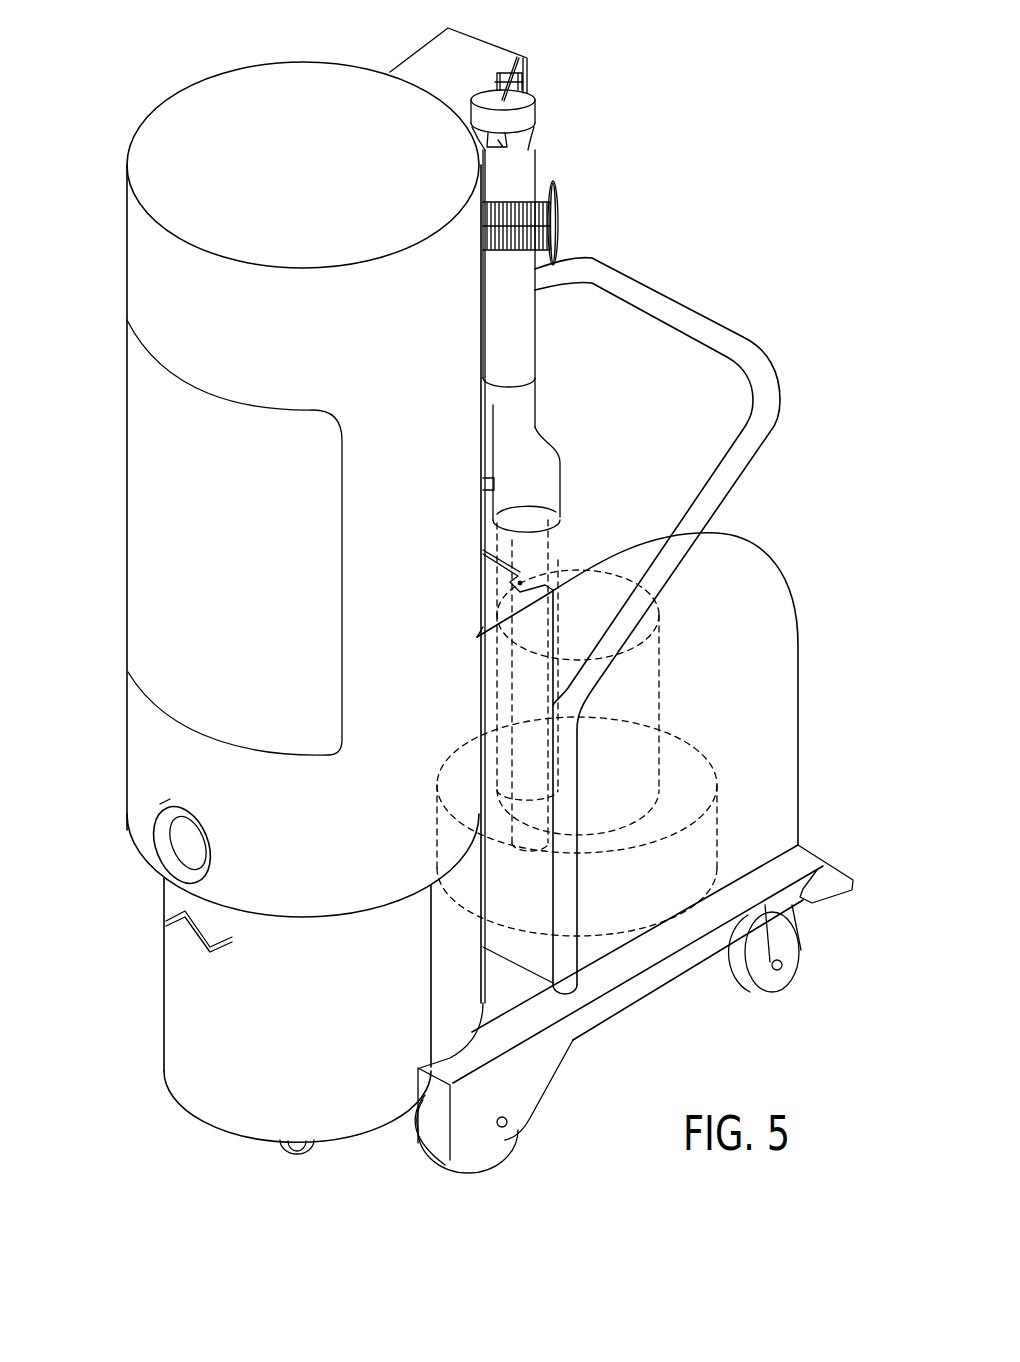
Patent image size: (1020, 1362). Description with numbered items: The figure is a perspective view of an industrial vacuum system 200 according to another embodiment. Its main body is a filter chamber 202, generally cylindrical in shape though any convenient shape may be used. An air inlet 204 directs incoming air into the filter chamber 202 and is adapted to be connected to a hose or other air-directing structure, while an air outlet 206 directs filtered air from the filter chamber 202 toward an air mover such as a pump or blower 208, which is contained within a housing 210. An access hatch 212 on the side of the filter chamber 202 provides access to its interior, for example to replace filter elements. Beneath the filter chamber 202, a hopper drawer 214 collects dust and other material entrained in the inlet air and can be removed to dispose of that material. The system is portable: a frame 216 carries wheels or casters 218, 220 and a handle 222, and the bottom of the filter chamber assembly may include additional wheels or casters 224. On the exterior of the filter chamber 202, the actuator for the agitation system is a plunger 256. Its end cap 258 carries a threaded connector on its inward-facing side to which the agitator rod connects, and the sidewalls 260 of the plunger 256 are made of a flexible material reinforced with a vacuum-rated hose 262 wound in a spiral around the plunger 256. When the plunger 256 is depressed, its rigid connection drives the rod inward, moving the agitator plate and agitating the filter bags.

The industrial vacuum system 200 is at (187, 79).
The filter chamber 202 is at (123, 262).
The air inlet 204 is at (143, 808).
The air outlet 206 is at (519, 345).
The pump or blower 208 is at (660, 678).
The housing 210 is at (785, 592).
The access hatch 212 is at (140, 573).
The hopper drawer 214 is at (180, 992).
The frame 216 is at (645, 990).
The wheel or caster 218 is at (430, 1134).
The wheel or caster 220 is at (754, 983).
The handle 222 is at (681, 312).
The wheel or caster 224 is at (297, 1160).
The plunger 256 is at (553, 179).
The end cap 258 is at (560, 230).
The sidewalls 260 is at (517, 253).
The vacuum-rated hose 262 is at (507, 200).